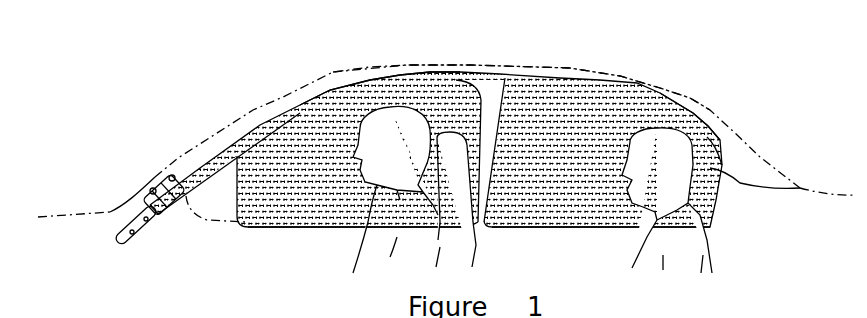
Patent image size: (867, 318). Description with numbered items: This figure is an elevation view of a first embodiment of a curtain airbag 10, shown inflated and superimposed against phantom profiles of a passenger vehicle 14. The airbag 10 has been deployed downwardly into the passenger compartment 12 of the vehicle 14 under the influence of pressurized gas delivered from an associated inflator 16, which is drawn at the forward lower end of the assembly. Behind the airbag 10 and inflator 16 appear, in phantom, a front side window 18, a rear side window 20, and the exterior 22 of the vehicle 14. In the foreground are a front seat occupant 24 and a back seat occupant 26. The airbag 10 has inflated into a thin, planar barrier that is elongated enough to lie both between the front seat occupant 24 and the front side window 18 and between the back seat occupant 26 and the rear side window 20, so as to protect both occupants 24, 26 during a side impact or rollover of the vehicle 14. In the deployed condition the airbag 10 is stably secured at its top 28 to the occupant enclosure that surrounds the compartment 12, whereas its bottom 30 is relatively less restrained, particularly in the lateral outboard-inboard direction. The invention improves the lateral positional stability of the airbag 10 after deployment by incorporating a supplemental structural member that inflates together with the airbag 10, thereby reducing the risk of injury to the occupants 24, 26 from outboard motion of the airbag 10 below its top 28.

The curtain airbag 10 is at (554, 130).
The passenger compartment 12 is at (287, 267).
The vehicle 14 is at (353, 63).
The inflator 16 is at (133, 246).
The front side window 18 is at (411, 79).
The rear side window 20 is at (655, 101).
The exterior of vehicle 22 is at (709, 104).
The front seat occupant 24 is at (402, 164).
The back seat occupant 26 is at (675, 177).
The top of airbag 28 is at (300, 112).
The bottom of airbag 30 is at (312, 198).